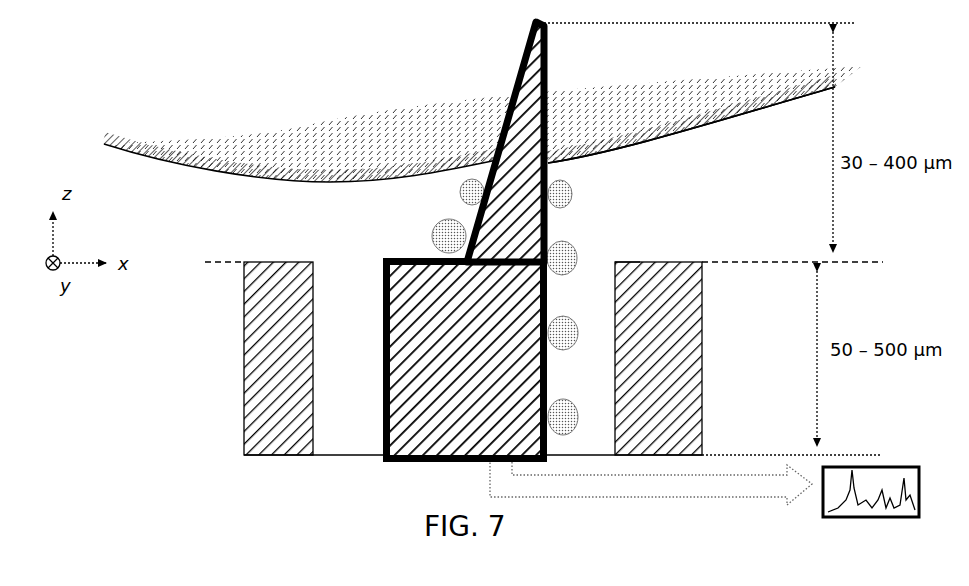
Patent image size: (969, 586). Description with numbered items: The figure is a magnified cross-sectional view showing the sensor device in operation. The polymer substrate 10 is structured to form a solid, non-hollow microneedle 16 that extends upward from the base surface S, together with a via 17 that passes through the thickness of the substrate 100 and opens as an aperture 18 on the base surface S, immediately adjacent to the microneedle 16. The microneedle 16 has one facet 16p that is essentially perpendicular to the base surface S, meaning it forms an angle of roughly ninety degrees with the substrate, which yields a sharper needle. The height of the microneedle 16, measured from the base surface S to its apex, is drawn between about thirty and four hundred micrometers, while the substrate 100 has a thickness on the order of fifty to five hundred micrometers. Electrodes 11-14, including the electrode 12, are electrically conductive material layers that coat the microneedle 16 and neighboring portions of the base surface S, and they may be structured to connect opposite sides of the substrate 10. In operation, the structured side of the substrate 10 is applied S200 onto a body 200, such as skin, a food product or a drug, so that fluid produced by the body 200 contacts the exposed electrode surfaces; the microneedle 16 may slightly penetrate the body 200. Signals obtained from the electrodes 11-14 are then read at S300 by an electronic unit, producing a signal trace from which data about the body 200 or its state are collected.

The polymer substrate 10 is at (166, 427).
The electrode 12 is at (257, 259).
The electrodes 11-14 is at (392, 258).
The microneedle 16 is at (508, 160).
The perpendicular facet 16p is at (550, 107).
The via 17 is at (375, 466).
The aperture 18 is at (621, 258).
The substrate 100 is at (700, 333).
The body 200 is at (172, 160).
The base surface S is at (731, 261).
The applying step S200 is at (622, 181).
The signal reading step S300 is at (828, 518).